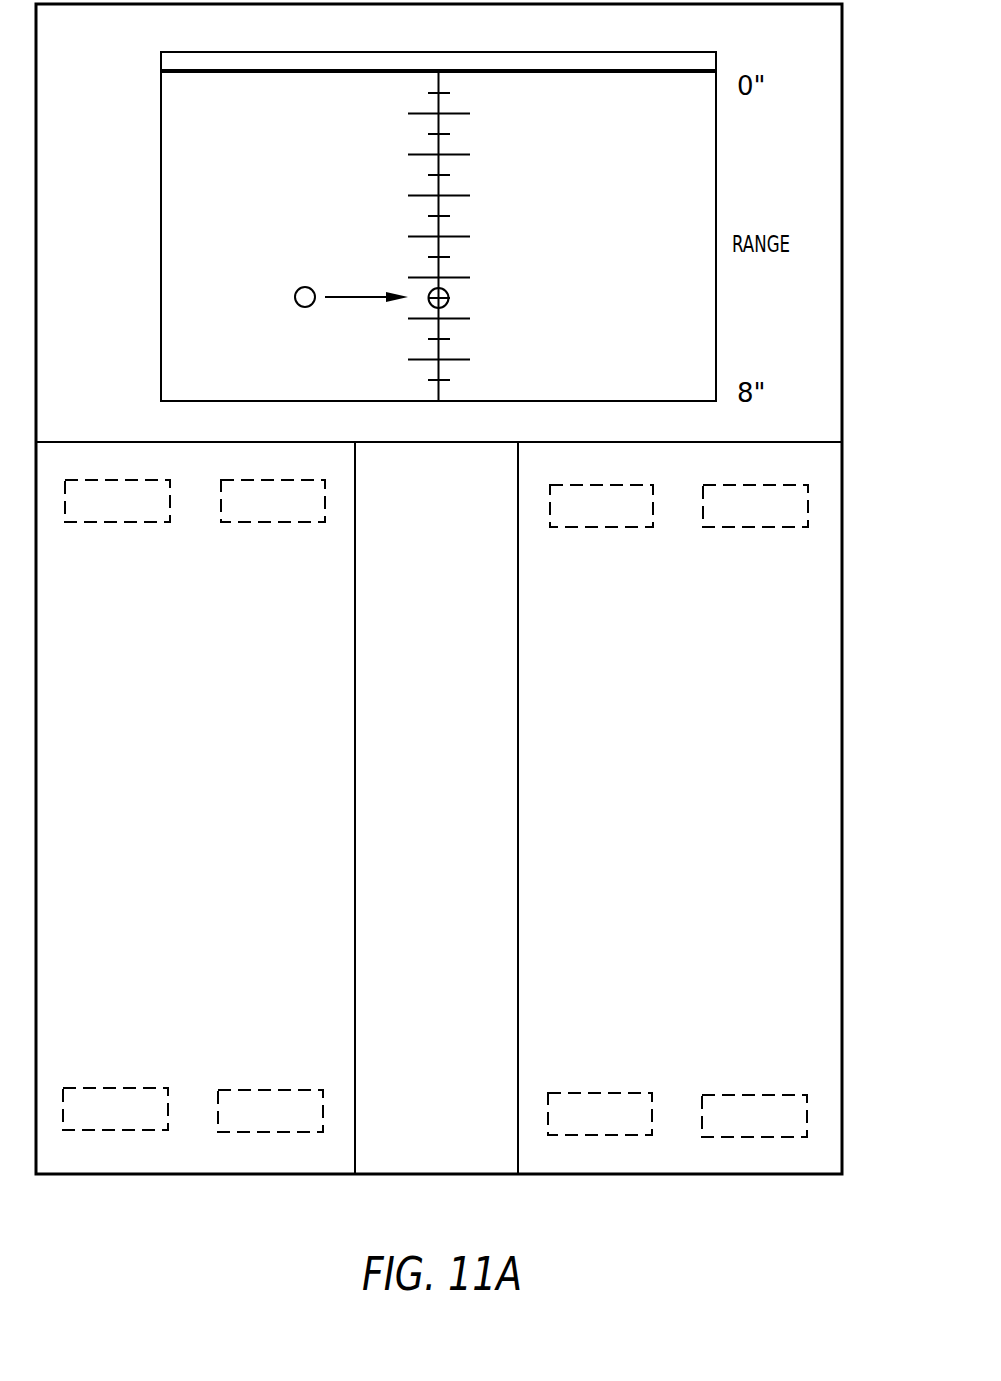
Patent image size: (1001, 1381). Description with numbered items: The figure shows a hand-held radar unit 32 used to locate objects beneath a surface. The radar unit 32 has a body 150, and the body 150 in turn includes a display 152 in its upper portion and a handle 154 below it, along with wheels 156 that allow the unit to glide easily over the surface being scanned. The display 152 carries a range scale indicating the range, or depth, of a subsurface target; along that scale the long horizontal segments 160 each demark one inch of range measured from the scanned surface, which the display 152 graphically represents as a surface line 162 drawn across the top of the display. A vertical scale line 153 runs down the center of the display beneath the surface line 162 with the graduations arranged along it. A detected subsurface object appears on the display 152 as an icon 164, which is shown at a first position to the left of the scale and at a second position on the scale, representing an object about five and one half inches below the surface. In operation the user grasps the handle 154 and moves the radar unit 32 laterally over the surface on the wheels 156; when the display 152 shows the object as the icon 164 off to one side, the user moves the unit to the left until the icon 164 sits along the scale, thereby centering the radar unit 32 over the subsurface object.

The hand-held radar unit 32 is at (842, 157).
The body 150 is at (828, 742).
The display 152 is at (160, 194).
The range scale line 153 is at (438, 177).
The handle 154 is at (354, 742).
The wheels 156 is at (727, 527).
The long horizontal segments 160 is at (461, 114).
The surface line 162 is at (647, 73).
The icon 164 is at (304, 287).